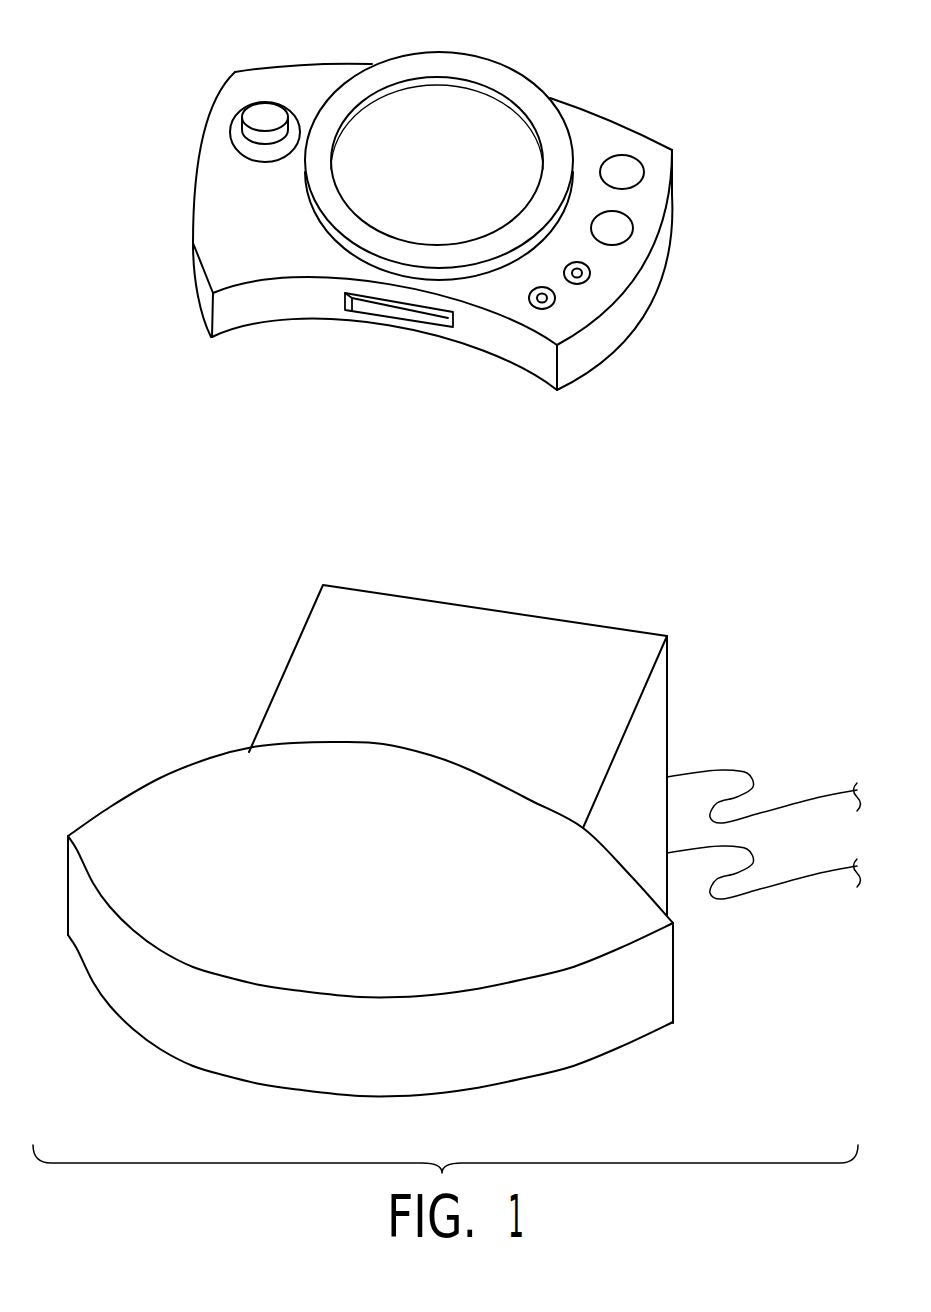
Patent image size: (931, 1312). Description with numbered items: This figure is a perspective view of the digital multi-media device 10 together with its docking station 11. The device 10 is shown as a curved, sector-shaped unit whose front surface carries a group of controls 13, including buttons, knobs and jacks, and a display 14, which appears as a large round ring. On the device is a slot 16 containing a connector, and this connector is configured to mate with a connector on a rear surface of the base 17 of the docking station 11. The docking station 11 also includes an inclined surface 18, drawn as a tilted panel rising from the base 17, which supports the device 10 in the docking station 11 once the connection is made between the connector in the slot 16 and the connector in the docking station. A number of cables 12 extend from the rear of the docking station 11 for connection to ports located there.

The device 10 is at (717, 48).
The docking station 11 is at (464, 849).
The cables 12 is at (777, 808).
The controls 13 is at (262, 110).
The display 14 is at (477, 107).
The slot 16 is at (403, 305).
The base 17 is at (153, 995).
The inclined surface 18 is at (572, 642).